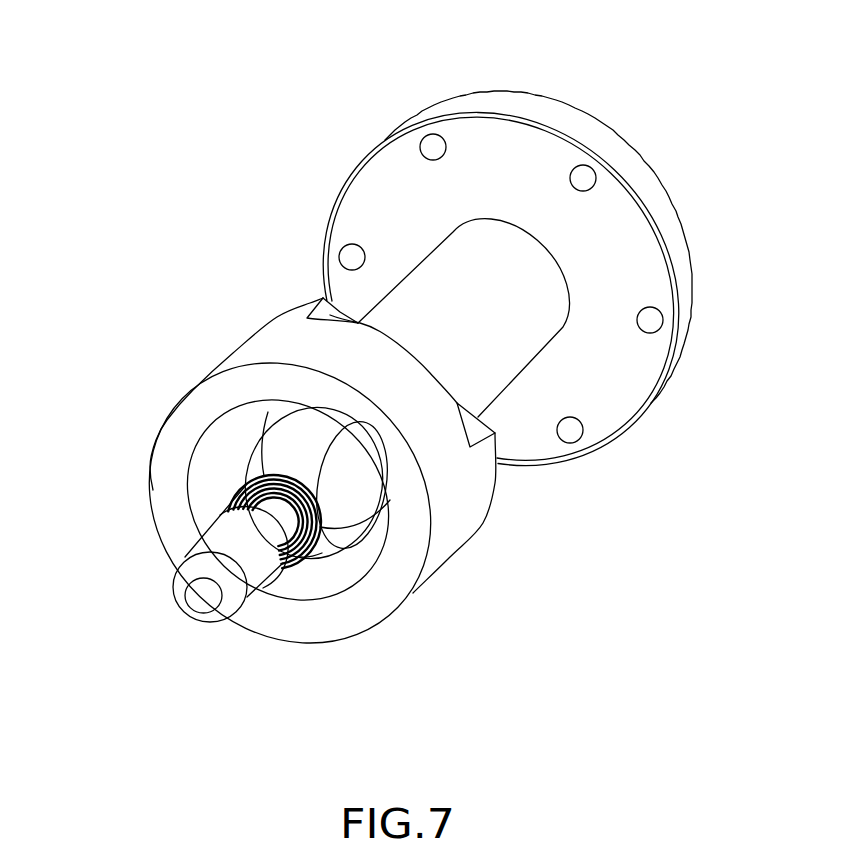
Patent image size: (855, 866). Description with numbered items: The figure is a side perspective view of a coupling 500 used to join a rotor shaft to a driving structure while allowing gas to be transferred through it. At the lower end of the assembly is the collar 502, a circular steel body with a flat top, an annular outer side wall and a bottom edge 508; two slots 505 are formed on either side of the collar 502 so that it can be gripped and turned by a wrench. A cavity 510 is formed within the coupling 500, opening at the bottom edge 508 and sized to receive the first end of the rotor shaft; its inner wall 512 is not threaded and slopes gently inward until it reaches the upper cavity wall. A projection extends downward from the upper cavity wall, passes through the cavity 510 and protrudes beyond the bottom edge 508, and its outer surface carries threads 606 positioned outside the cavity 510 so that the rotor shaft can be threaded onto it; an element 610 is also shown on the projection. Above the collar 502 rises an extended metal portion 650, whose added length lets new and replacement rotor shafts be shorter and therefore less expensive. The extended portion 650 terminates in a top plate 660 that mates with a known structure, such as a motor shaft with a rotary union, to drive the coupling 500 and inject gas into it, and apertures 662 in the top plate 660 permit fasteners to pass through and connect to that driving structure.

The coupling 500 is at (341, 97).
The collar 502 is at (230, 328).
The slots 505 is at (495, 433).
The bottom edge 508 is at (413, 593).
The cavity 510 is at (240, 457).
The inner wall 512 is at (216, 448).
The threads 606 is at (325, 532).
The tube 610 is at (175, 545).
The extended metal portion 650 is at (397, 264).
The top plate 660 is at (634, 156).
The apertures 662 is at (583, 181).